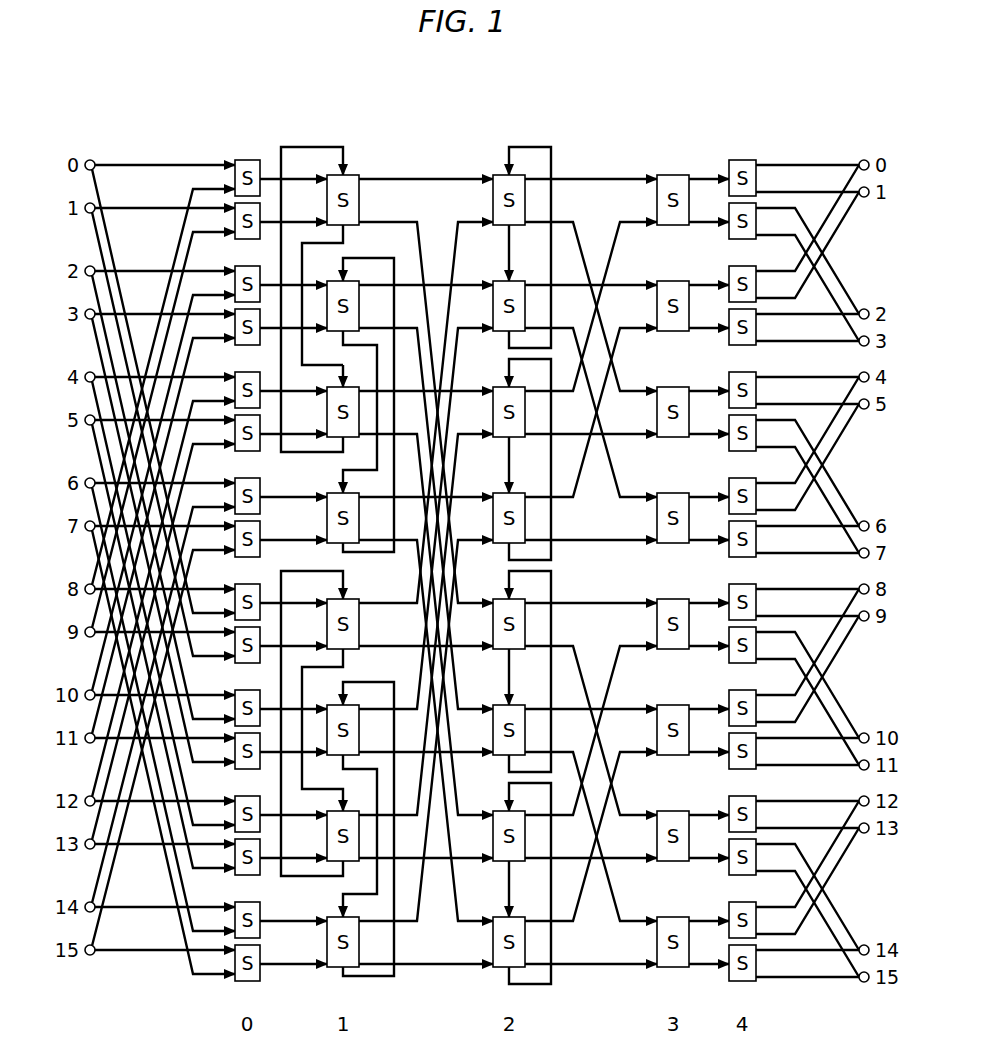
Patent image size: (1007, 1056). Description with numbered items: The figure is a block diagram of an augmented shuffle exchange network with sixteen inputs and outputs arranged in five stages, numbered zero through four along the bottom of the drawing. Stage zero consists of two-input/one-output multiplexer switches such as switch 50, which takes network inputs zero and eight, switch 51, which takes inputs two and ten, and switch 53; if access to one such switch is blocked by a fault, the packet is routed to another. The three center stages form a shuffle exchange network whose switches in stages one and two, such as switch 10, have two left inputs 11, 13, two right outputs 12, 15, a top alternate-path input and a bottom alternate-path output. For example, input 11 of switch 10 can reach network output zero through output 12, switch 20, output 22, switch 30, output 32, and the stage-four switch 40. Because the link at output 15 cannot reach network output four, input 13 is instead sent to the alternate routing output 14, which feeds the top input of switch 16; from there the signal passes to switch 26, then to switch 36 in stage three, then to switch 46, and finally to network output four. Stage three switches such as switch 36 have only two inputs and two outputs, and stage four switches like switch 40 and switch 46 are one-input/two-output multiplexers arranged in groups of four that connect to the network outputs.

The switch 10 is at (351, 174).
The input 11 is at (299, 178).
The output 12 is at (457, 177).
The input 13 is at (292, 221).
The alternate routing output 14 is at (343, 233).
The output 15 is at (386, 220).
The switch 16 is at (344, 379).
The switch 20 is at (499, 172).
The output 22 is at (605, 178).
The switch 26 is at (500, 385).
The switch 30 is at (675, 173).
The output 32 is at (700, 178).
The switch 36 is at (670, 388).
The switch 40 is at (739, 158).
The switch 46 is at (739, 373).
The switch 50 is at (258, 158).
The switch 51 is at (246, 267).
The switch 53 is at (241, 240).